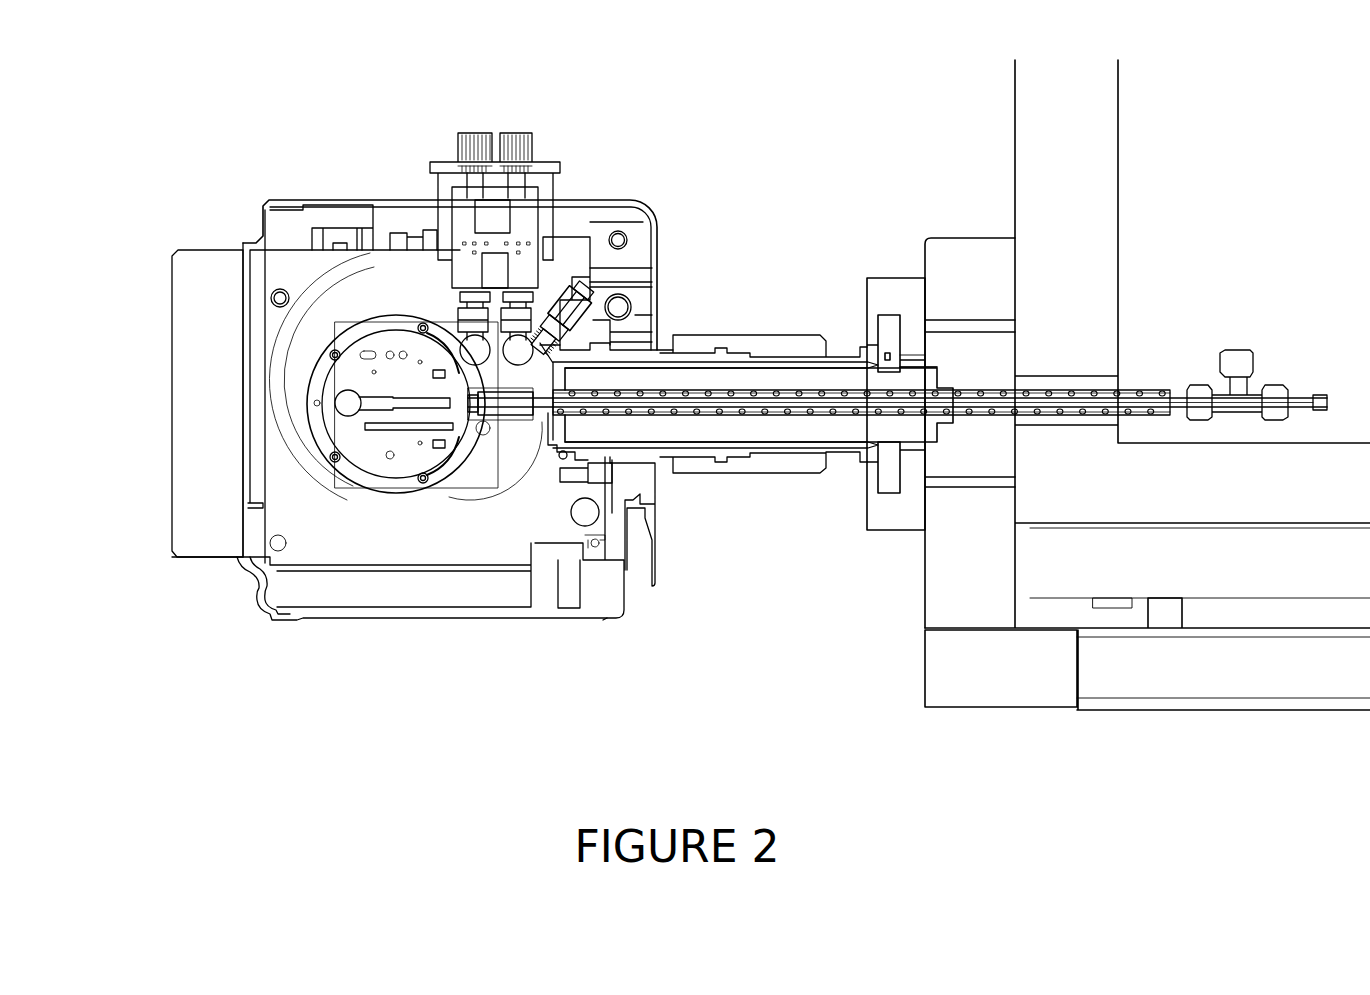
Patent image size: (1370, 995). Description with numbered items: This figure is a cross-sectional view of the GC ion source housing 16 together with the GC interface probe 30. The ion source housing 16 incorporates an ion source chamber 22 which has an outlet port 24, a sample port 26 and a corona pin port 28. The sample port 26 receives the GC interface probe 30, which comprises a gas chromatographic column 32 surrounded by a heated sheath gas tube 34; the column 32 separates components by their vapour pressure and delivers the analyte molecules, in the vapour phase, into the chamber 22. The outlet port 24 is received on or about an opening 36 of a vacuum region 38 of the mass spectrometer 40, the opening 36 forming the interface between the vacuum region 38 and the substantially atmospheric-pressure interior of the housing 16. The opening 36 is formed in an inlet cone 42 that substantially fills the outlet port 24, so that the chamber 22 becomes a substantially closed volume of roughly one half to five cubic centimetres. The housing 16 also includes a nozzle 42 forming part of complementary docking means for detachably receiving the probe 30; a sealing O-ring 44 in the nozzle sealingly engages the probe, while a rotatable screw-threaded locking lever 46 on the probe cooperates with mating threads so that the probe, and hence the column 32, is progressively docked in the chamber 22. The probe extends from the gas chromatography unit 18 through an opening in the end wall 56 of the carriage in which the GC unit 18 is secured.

The ion source housing 16 is at (577, 260).
The gas chromatography unit 18 is at (1243, 272).
The ion source chamber 22 is at (503, 417).
The outlet port 24 is at (474, 406).
The sample port 26 is at (538, 412).
The corona pin port 28 is at (520, 417).
The GC interface probe 30 is at (808, 427).
The gas chromatographic column 32 is at (846, 398).
The heated sheath gas tube 34 is at (857, 382).
The opening 36 is at (495, 365).
The vacuum region 38 is at (408, 400).
The mass spectrometer 40 is at (386, 463).
The inlet cone / nozzle 42 is at (667, 340).
The sealing O-ring 44 is at (562, 453).
The locking lever 46 is at (718, 467).
The end wall 56 is at (960, 255).